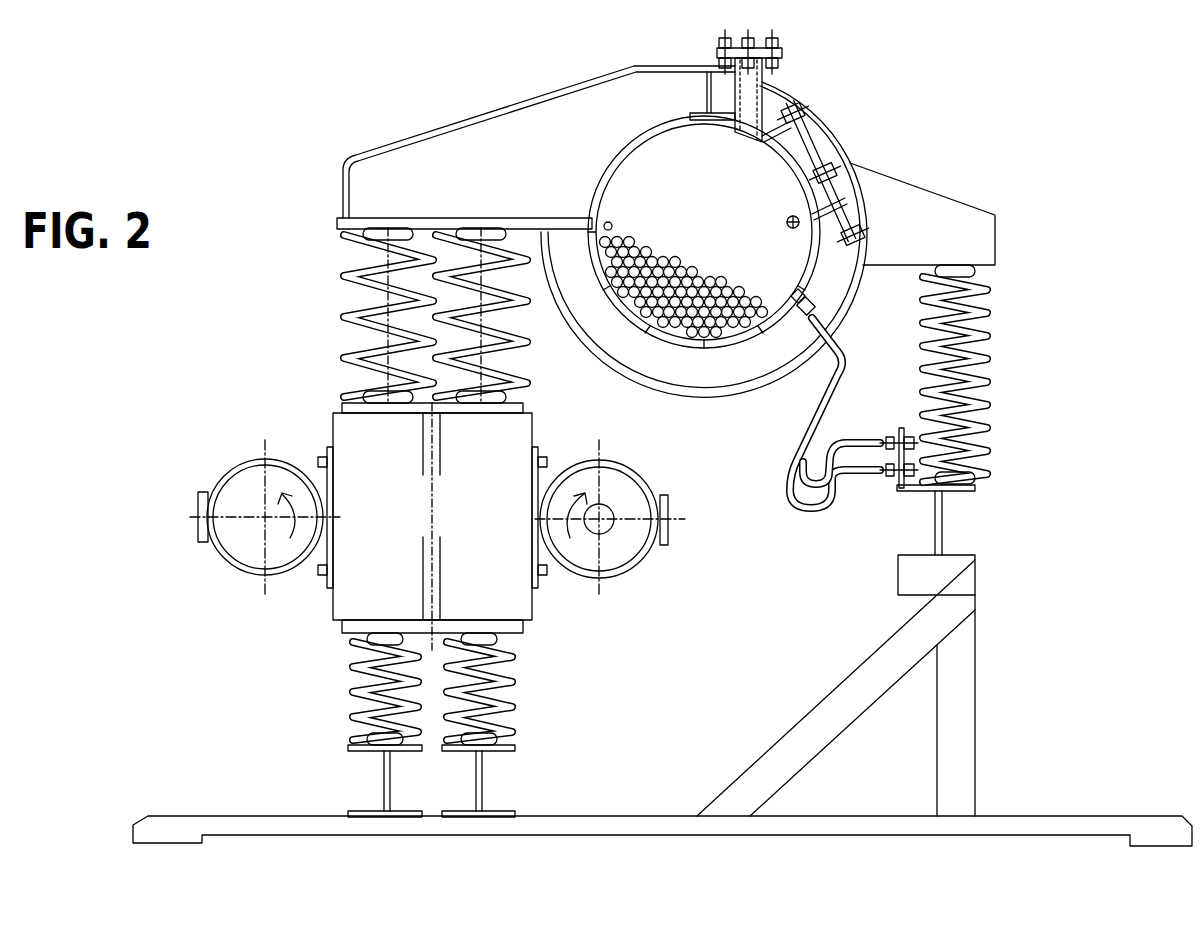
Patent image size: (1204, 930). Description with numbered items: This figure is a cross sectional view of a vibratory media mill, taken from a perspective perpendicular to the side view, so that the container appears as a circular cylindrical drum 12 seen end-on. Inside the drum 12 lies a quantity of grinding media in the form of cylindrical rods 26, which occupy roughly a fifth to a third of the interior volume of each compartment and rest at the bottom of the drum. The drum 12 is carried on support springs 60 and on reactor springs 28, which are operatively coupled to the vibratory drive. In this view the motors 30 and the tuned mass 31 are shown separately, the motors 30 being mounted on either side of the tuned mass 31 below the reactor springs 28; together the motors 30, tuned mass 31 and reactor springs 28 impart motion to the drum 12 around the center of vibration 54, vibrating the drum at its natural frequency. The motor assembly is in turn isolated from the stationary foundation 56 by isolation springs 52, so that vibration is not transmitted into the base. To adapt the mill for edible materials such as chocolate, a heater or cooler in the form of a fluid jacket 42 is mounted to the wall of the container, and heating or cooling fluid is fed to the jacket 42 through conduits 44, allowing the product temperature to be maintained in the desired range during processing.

The cylindrical drum 12 is at (722, 212).
The cylindrical rods 26 is at (672, 281).
The reactor springs 28 is at (345, 285).
The motors 30 is at (252, 463).
The tuned mass 31 is at (451, 523).
The fluid jacket 42 is at (806, 294).
The conduits 44 is at (906, 436).
The isolation springs 52 is at (355, 692).
The center of vibration 54 is at (800, 220).
The stationary foundation 56 is at (765, 832).
The support springs 60 is at (985, 360).